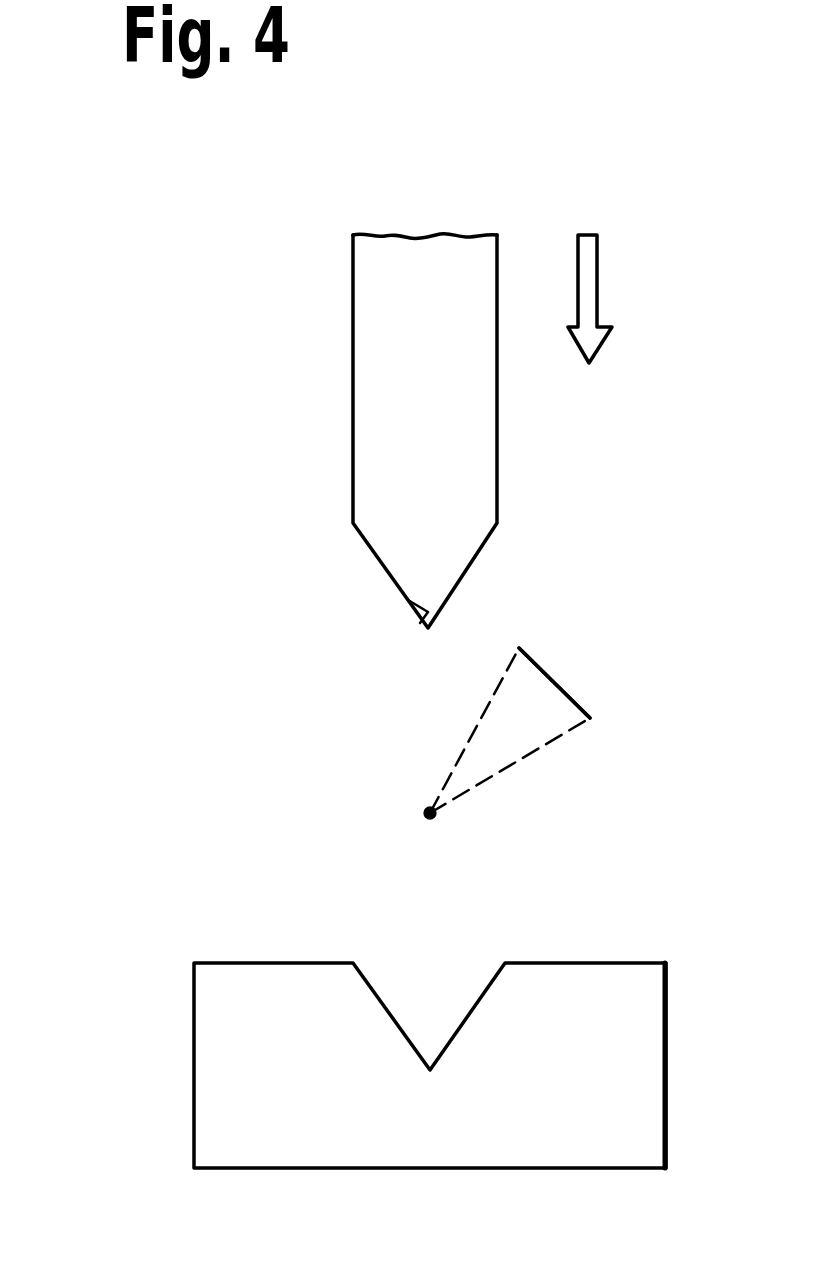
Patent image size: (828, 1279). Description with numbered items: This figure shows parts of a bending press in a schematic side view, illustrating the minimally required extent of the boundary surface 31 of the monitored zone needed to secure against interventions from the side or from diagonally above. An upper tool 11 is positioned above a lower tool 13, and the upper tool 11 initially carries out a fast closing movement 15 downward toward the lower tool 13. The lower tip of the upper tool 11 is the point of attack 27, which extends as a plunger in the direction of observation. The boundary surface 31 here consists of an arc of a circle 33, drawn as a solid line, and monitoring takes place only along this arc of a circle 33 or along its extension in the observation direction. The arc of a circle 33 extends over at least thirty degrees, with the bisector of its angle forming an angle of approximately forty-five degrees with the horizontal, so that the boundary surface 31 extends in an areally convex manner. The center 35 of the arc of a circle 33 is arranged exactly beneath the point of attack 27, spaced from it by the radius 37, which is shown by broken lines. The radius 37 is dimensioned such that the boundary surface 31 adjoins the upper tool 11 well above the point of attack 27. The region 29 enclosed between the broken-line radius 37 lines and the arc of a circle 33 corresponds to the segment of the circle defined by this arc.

The upper tool 11 is at (376, 348).
The lower tool 13 is at (208, 1002).
The closing movement 15 is at (588, 255).
The point of attack 27 is at (406, 600).
The sector region 29 is at (521, 712).
The boundary surface 31 is at (545, 664).
The arc of a circle 33 is at (570, 683).
The center 35 is at (430, 813).
The radius 37 is at (460, 752).